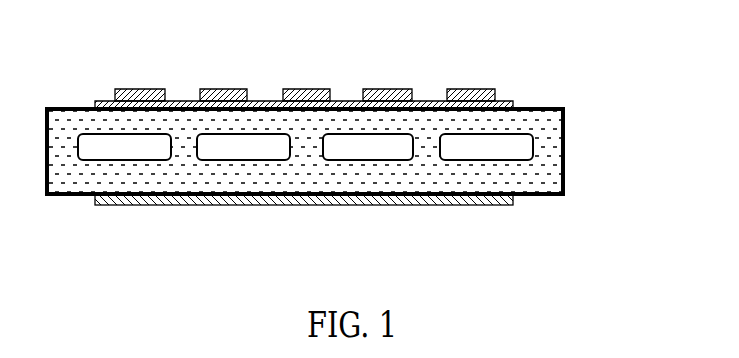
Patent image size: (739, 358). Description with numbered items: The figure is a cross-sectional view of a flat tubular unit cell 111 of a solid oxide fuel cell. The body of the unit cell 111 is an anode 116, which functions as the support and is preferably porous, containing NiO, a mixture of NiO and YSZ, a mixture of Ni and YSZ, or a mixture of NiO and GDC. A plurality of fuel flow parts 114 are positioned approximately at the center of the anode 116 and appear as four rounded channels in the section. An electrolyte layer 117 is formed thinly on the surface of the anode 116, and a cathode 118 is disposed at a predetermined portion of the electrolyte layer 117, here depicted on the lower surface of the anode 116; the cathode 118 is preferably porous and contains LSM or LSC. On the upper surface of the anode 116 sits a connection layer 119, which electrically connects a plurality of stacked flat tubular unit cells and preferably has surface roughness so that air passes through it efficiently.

The unit cell 111 is at (363, 150).
The fuel flow parts 114 is at (112, 148).
The anode 116 is at (542, 175).
The electrolyte layer 117 is at (543, 107).
The cathode 118 is at (397, 205).
The connection layer 119 is at (395, 88).